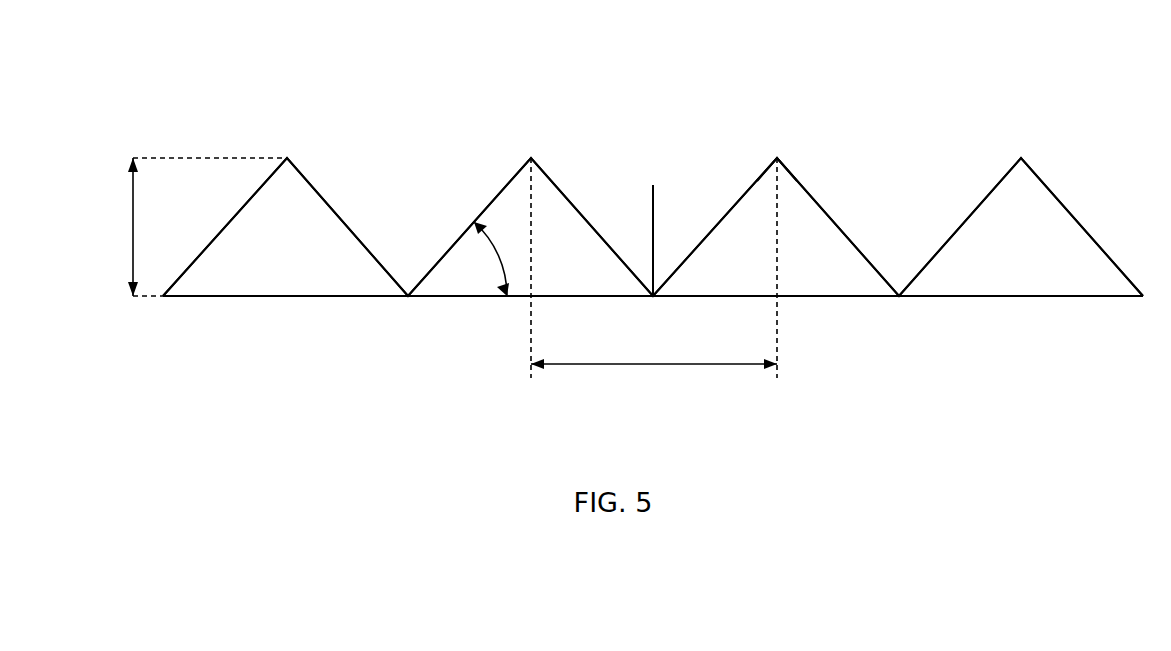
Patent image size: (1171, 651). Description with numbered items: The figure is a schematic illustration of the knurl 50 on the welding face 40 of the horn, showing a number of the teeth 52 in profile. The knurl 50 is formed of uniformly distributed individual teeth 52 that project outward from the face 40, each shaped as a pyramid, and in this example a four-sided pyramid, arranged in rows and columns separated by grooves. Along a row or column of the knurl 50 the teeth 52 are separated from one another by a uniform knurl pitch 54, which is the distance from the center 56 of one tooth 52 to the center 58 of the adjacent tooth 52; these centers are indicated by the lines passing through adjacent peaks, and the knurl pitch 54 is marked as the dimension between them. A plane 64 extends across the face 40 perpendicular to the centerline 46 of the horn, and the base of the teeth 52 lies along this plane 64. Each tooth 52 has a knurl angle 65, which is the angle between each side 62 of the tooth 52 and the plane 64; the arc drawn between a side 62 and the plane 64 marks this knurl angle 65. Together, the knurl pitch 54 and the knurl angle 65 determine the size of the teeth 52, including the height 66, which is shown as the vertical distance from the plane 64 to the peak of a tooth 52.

The face 40 is at (697, 78).
The centerline 46 is at (654, 215).
The knurl 50 is at (790, 162).
The teeth 52 is at (327, 196).
The knurl pitch 54 is at (682, 366).
The center 56 is at (527, 336).
The center 58 is at (780, 338).
The side 62 is at (458, 240).
The plane 64 is at (435, 298).
The knurl angle 65 is at (497, 247).
The height 66 is at (133, 200).